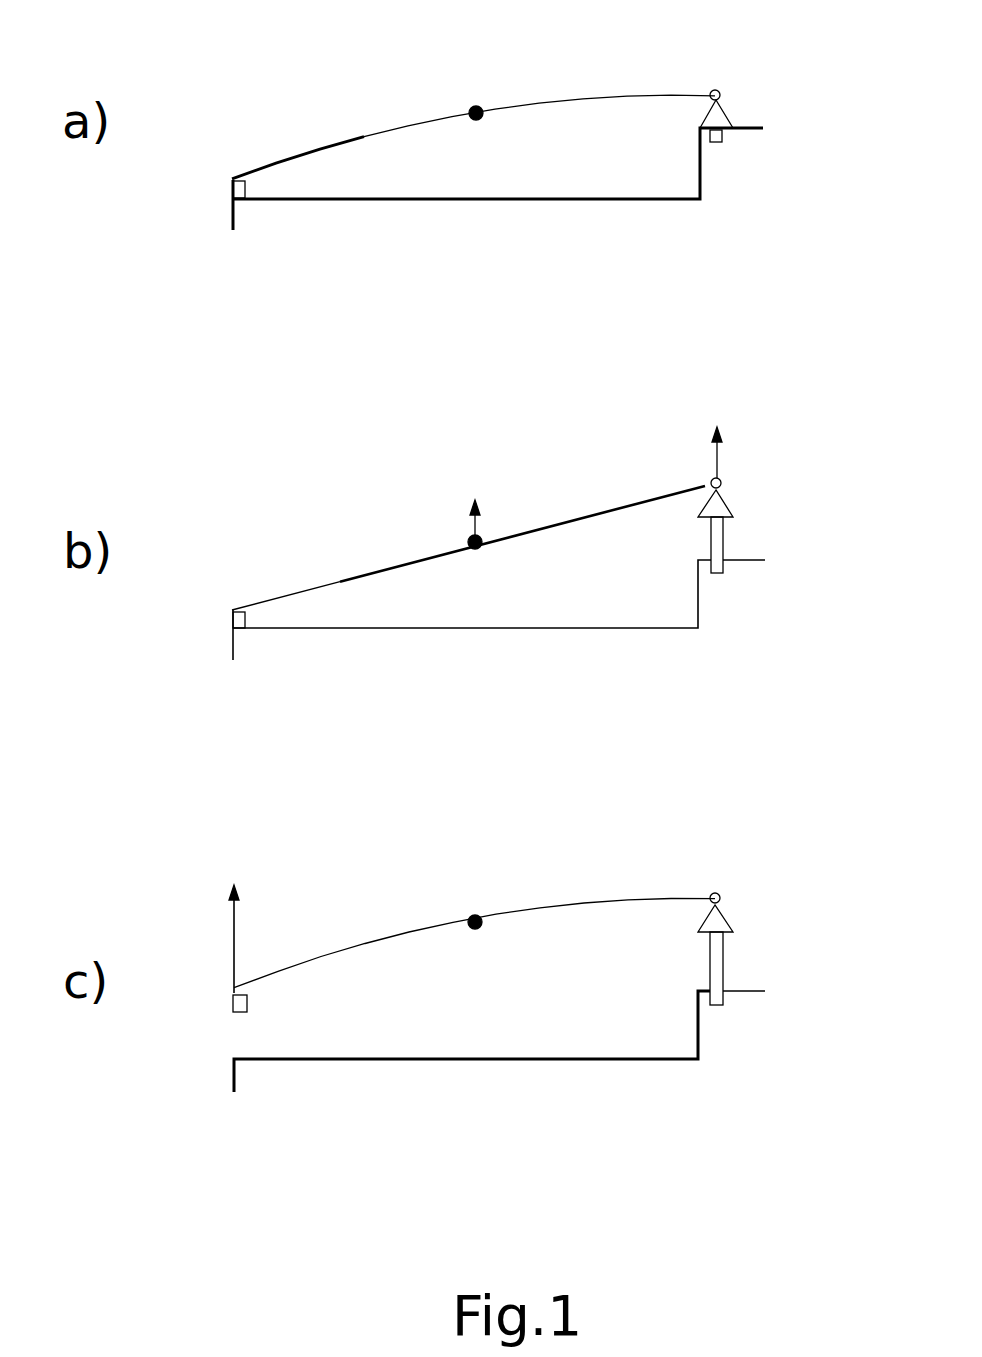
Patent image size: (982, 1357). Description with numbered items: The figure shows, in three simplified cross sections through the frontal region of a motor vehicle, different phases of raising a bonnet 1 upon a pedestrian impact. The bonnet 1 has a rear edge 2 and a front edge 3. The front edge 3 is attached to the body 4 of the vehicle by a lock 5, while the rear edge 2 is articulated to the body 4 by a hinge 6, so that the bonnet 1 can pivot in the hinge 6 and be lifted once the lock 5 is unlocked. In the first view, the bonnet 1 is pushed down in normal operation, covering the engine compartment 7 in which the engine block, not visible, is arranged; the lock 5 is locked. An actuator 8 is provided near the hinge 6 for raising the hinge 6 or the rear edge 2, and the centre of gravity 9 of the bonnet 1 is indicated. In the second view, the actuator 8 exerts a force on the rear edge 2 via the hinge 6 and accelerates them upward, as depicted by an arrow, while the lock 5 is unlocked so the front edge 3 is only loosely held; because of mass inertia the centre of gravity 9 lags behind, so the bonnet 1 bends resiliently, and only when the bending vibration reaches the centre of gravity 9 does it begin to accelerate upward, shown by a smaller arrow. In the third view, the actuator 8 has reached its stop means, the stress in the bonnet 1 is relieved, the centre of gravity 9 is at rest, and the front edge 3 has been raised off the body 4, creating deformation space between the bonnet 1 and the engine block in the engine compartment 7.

The bonnet 1 is at (352, 137).
The rear edge 2 is at (705, 892).
The front edge 3 is at (232, 180).
The body 4 is at (228, 225).
The lock 5 is at (182, 1010).
The hinge 6 is at (725, 113).
The engine compartment 7 is at (506, 575).
The actuator 8 is at (722, 140).
The centre of gravity 9 is at (481, 103).